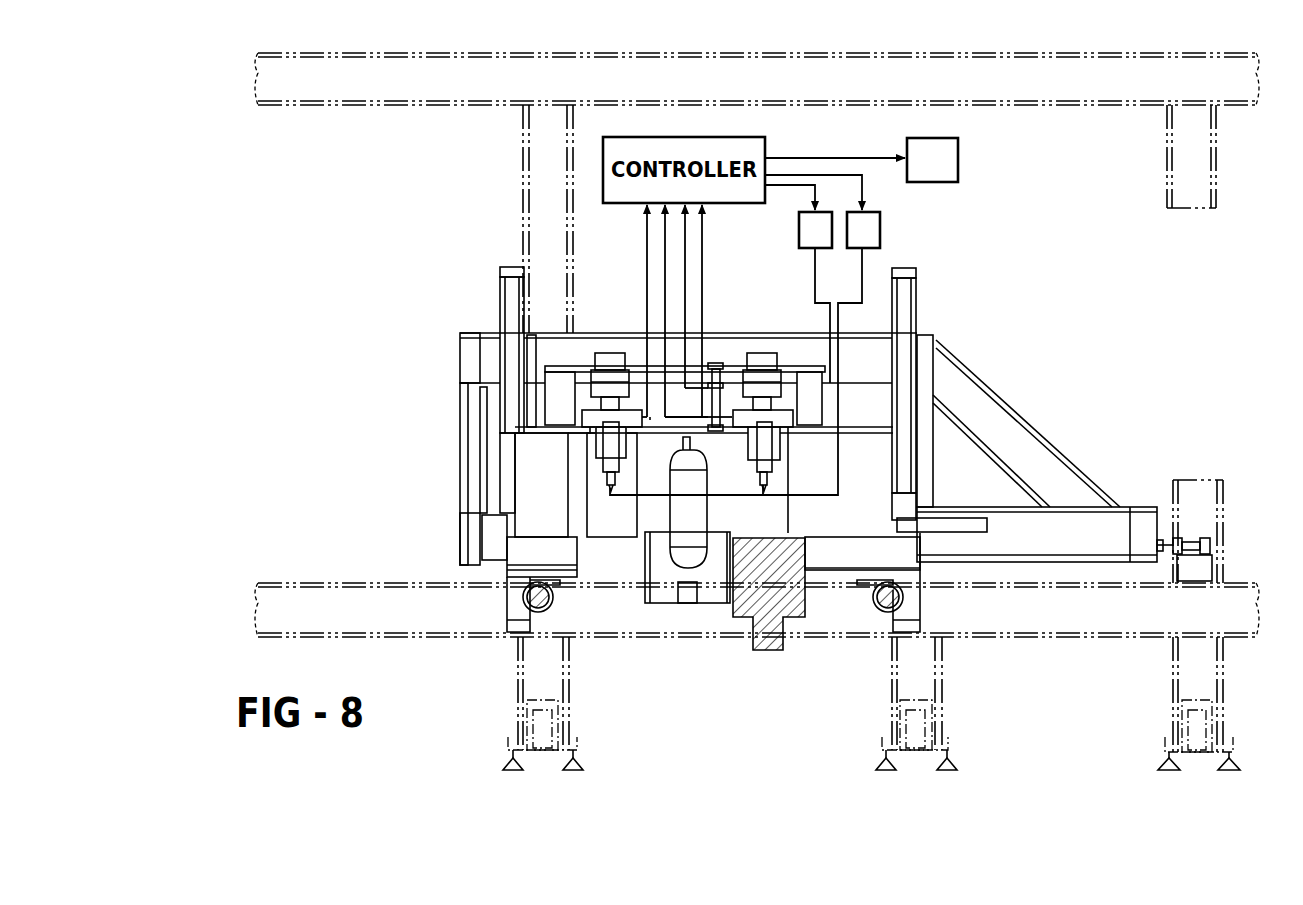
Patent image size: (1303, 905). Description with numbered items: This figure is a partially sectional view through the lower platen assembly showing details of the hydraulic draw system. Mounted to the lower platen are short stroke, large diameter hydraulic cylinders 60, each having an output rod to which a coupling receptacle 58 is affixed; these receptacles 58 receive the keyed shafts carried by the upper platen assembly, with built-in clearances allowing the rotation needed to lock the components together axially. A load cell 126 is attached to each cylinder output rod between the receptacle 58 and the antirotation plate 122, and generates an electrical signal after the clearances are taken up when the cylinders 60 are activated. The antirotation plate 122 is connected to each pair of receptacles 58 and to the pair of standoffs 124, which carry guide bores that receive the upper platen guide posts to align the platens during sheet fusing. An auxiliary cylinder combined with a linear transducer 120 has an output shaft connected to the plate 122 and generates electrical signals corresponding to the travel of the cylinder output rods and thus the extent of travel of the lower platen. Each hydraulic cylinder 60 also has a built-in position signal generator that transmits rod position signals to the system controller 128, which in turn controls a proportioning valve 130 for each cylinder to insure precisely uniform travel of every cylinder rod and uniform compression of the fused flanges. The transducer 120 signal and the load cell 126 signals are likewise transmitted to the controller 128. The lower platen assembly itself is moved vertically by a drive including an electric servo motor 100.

The system controller 128 is at (603, 150).
The electric servo motor 100 is at (946, 150).
The proportioning valve 130 is at (799, 240).
The standoffs 124 is at (553, 400).
The antirotation plate 122 is at (806, 333).
The auxiliary cylinder combined with a linear transducer 120 is at (718, 400).
The coupling receptacles 58 is at (608, 357).
The load cell 126 is at (590, 393).
The hydraulic cylinder 60 is at (608, 440).